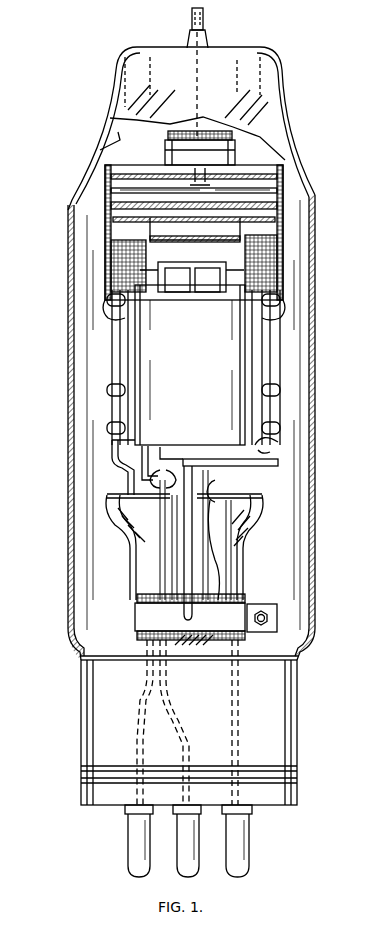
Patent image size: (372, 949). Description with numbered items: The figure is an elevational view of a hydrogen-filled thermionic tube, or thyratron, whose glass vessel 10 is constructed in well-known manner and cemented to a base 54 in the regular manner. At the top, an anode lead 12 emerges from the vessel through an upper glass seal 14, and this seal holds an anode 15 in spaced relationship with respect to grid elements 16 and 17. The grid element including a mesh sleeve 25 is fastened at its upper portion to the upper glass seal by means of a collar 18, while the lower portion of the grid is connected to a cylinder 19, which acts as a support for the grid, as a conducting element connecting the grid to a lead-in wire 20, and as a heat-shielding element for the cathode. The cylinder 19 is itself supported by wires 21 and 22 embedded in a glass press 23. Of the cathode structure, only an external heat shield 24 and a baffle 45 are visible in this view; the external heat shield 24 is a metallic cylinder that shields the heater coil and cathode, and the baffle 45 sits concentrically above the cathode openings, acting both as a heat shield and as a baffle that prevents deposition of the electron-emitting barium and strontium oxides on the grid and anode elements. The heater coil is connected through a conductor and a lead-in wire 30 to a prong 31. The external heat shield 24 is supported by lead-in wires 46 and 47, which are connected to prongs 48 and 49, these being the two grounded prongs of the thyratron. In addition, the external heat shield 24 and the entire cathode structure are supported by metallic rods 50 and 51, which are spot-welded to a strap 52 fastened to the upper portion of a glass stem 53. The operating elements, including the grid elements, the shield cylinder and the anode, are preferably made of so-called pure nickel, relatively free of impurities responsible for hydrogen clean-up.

The glass vessel 10 is at (264, 100).
The anode lead 12 is at (203, 12).
The upper glass seal 14 is at (232, 75).
The anode 15 is at (110, 172).
The grid element 16 is at (112, 222).
The grid element 17 is at (110, 190).
The collar 18 is at (210, 160).
The cylinder 19 is at (290, 318).
The lead-in wire 20 is at (278, 461).
The wire 21 is at (210, 481).
The wire 22 is at (135, 470).
The glass press 23 is at (150, 498).
The external heat shield 24 is at (160, 367).
The mesh sleeve 25 is at (290, 250).
The lead-in wire 30 is at (140, 442).
The prong 31 is at (186, 870).
The baffle 45 is at (180, 262).
The lead-in wire 46 is at (240, 525).
The lead-in wire 47 is at (150, 486).
The prong 48 is at (240, 863).
The prong 49 is at (137, 862).
The metallic rod 50 is at (240, 497).
The metallic rod 51 is at (275, 432).
The strap 52 is at (265, 635).
The glass stem 53 is at (215, 574).
The base 54 is at (278, 706).